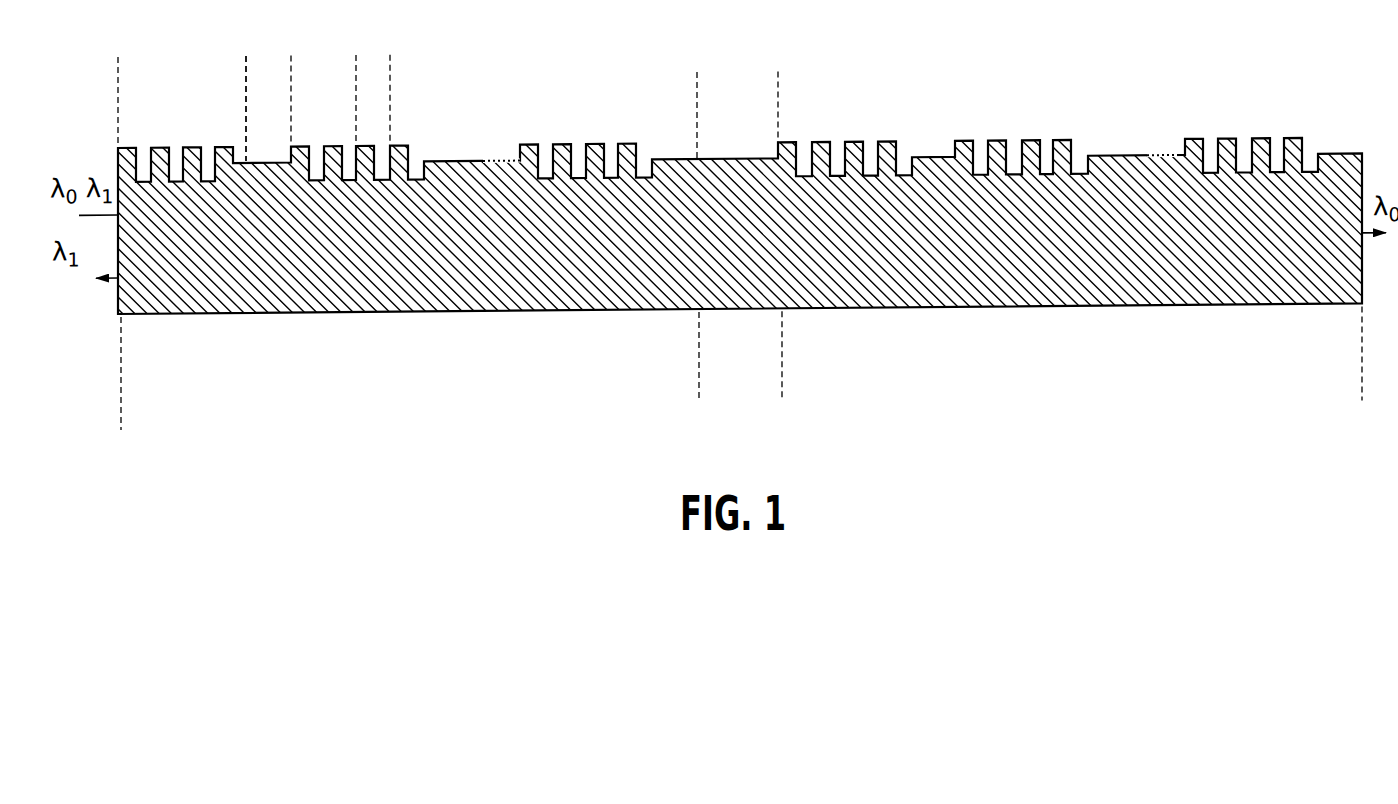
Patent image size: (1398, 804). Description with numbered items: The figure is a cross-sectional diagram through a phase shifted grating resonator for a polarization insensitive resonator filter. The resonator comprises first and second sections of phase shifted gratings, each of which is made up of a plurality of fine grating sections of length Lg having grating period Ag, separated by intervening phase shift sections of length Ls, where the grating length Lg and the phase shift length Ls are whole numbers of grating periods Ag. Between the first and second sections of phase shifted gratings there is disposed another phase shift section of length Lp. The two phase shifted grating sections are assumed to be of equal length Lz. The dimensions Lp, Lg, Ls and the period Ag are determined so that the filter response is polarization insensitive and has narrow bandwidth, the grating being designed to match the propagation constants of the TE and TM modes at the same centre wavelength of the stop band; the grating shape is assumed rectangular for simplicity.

The grating section length Lg is at (246, 100).
The phase shift section length Ls is at (303, 100).
The grating period Ag is at (407, 101).
The phase shift section length between grating sections Lp is at (778, 118).
The phase shifted grating section length Lz is at (1350, 370).